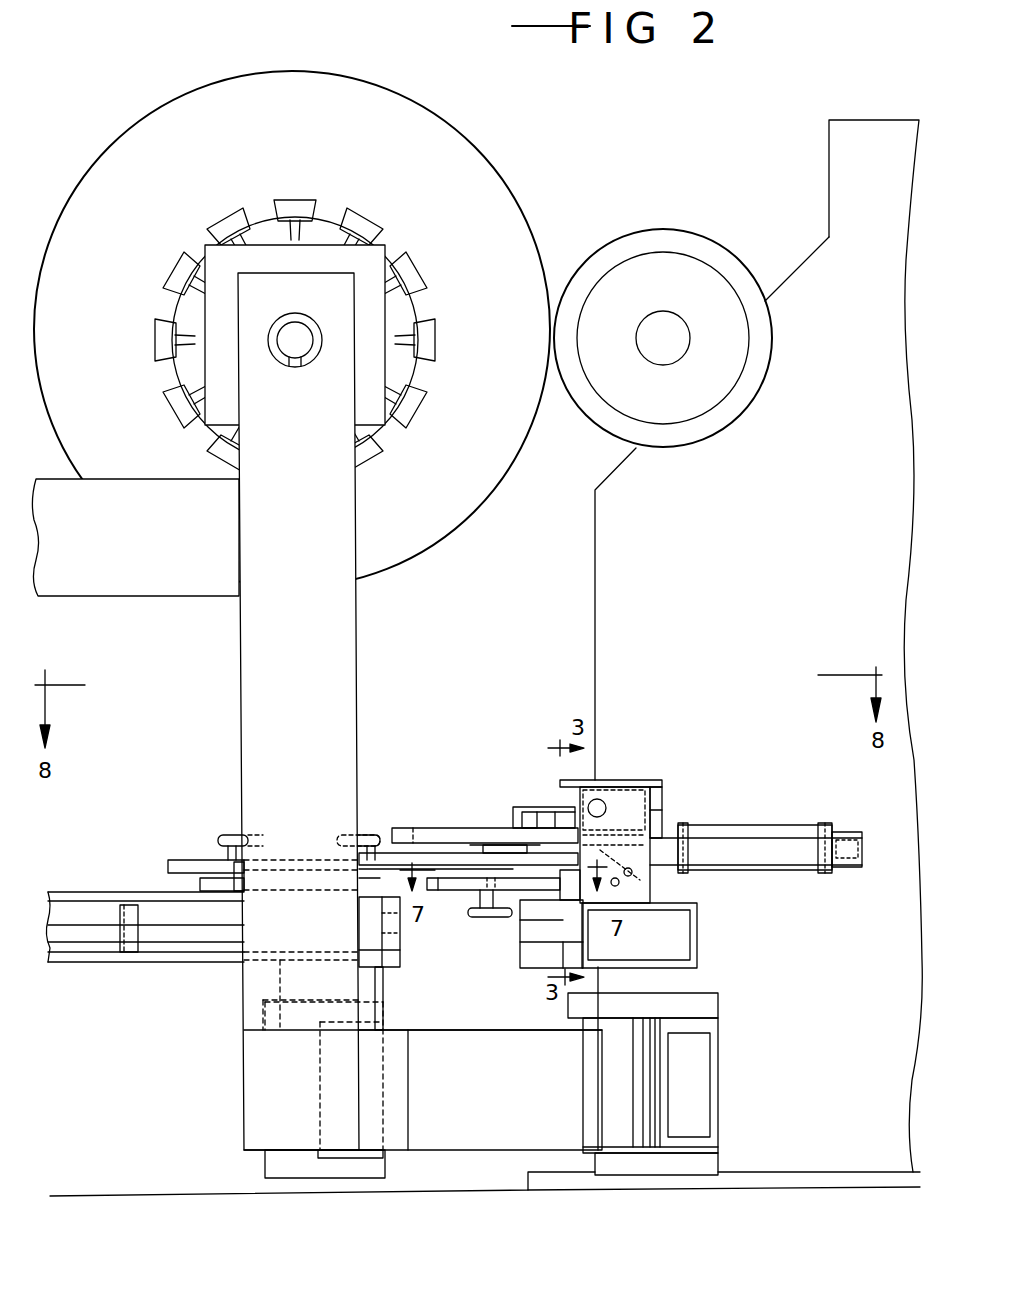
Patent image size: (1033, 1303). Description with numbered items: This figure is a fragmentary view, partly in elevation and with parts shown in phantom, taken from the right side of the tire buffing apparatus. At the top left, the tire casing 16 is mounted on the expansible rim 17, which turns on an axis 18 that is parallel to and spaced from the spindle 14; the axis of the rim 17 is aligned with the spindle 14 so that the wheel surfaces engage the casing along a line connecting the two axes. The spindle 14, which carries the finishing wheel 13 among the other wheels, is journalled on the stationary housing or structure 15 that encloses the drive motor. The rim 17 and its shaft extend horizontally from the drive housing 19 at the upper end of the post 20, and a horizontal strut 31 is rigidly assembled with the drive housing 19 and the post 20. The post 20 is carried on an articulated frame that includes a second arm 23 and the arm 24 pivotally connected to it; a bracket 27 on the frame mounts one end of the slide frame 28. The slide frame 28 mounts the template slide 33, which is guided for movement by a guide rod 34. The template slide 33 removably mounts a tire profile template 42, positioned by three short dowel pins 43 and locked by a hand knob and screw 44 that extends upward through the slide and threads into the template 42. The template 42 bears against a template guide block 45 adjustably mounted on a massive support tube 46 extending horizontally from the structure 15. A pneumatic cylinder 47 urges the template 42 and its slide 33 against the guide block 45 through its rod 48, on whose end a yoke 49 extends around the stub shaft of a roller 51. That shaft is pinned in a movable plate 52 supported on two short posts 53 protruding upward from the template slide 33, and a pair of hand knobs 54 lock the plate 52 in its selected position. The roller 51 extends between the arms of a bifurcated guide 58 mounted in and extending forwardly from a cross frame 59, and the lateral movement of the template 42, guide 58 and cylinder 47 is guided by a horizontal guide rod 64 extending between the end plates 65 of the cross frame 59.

The finishing wheel 13 is at (665, 230).
The spindle 14 is at (692, 314).
The stationary housing or structure 15 is at (596, 540).
The casing 16 is at (366, 74).
The expansible mandrel mechanism (rim) 17 is at (428, 305).
The axis 18 is at (302, 316).
The drive housing 19 is at (408, 368).
The post 20 is at (356, 628).
The second arm 23 is at (496, 1150).
The arm 24 is at (718, 1062).
The bracket 27 is at (376, 982).
The slide frame 28 is at (190, 970).
The horizontal strut 31 is at (142, 546).
The template slide 33 is at (86, 886).
The guide rod 34 is at (92, 930).
The template 42 is at (466, 876).
The dowel pins 43 is at (432, 896).
The hand knob and screw 44 is at (484, 918).
The template guide block 45 is at (566, 892).
The support tube 46 is at (698, 934).
The pneumatic cylinder 47 is at (758, 826).
The rod 48 is at (548, 828).
The yoke 49 is at (472, 842).
The roller 51 is at (478, 836).
The movable plate 52 is at (198, 860).
The short posts 53 is at (200, 883).
The hand knobs 54 is at (228, 836).
The bifurcated guide 58 is at (420, 828).
The cross frame 59 is at (672, 784).
The horizontal guide rod 64 is at (604, 802).
The end plates 65 is at (644, 870).